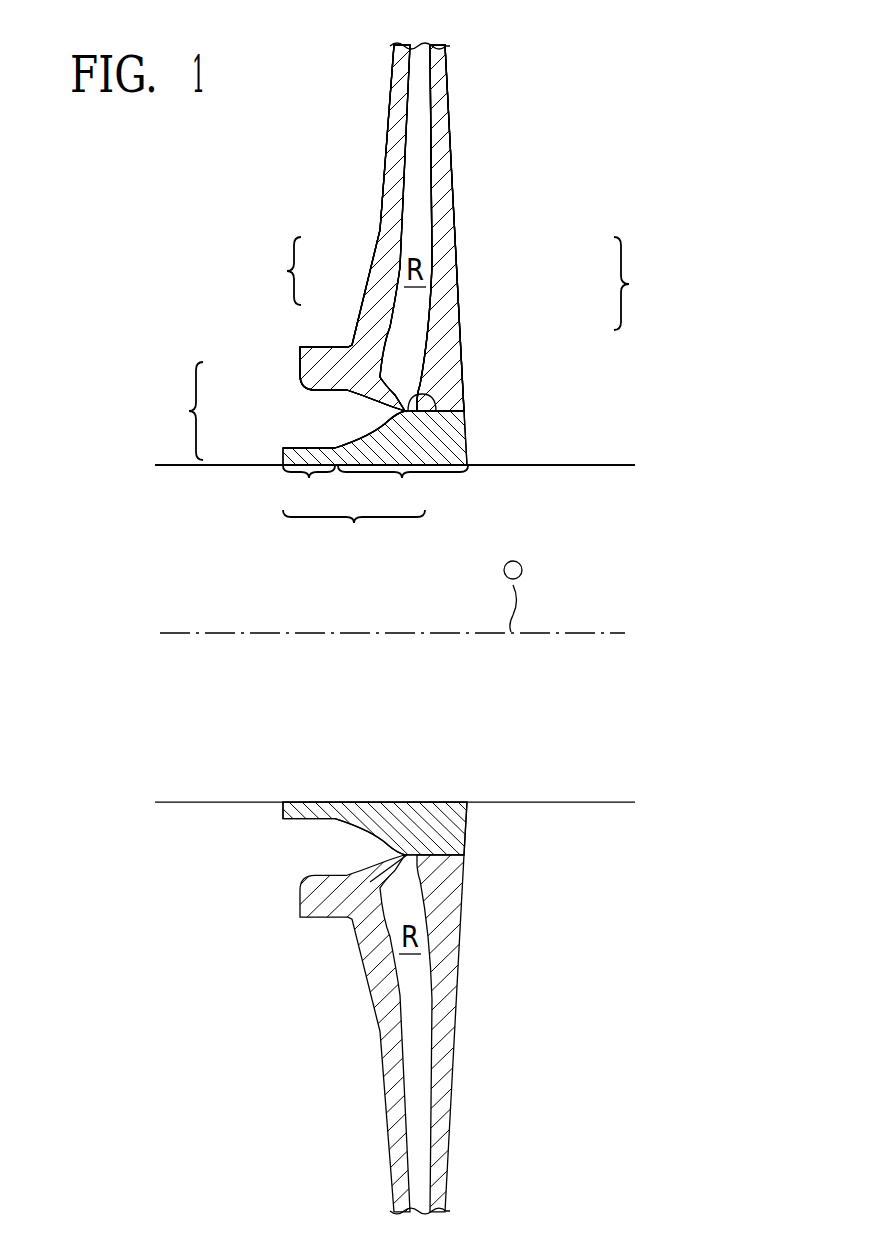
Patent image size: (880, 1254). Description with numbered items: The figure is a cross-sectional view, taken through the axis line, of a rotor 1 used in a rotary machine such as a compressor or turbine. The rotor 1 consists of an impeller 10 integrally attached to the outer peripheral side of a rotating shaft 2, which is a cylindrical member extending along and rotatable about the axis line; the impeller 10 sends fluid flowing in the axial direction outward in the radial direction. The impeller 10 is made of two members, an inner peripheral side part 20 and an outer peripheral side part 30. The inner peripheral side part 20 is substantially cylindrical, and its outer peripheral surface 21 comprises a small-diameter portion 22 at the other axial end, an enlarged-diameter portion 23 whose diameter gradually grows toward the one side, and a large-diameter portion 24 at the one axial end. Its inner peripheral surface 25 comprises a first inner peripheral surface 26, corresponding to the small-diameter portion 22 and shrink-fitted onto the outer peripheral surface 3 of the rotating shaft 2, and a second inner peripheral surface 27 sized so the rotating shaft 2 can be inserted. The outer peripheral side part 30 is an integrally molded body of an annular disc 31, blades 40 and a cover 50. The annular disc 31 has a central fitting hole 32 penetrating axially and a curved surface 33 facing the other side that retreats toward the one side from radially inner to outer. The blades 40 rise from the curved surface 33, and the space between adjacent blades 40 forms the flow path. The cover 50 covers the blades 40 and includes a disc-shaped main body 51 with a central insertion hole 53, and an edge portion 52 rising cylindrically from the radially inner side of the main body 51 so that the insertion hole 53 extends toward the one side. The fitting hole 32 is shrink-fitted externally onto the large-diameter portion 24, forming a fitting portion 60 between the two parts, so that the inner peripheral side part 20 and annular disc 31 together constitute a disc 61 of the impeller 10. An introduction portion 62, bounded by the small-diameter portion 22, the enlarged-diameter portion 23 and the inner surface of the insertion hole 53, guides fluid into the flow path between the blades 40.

The rotor 1 is at (663, 78).
The rotating shaft 2 is at (583, 478).
The outer peripheral surface of the rotating shaft 3 is at (530, 464).
The impeller 10 is at (537, 120).
The inner peripheral side part 20 is at (469, 444).
The outer peripheral surface 21 is at (279, 411).
The small-diameter portion 22 is at (307, 448).
The enlarged-diameter portion 23 is at (372, 430).
The large-diameter portion 24 is at (365, 402).
The inner peripheral surface 25 is at (354, 537).
The first inner peripheral surface 26 is at (309, 490).
The second inner peripheral surface 27 is at (403, 490).
The outer peripheral side part 30 is at (450, 117).
The annular disc 31 is at (458, 262).
The fitting hole 32 is at (469, 438).
The curved surface 33 is at (433, 200).
The blade 40 is at (423, 158).
The cover 50 is at (333, 228).
The main body of the cover 51 is at (385, 248).
The edge portion 52 is at (327, 352).
The insertion hole 53 is at (420, 355).
The fitting portion 60 is at (466, 852).
The disc 61 is at (639, 283).
The introduction portion 62 is at (323, 861).